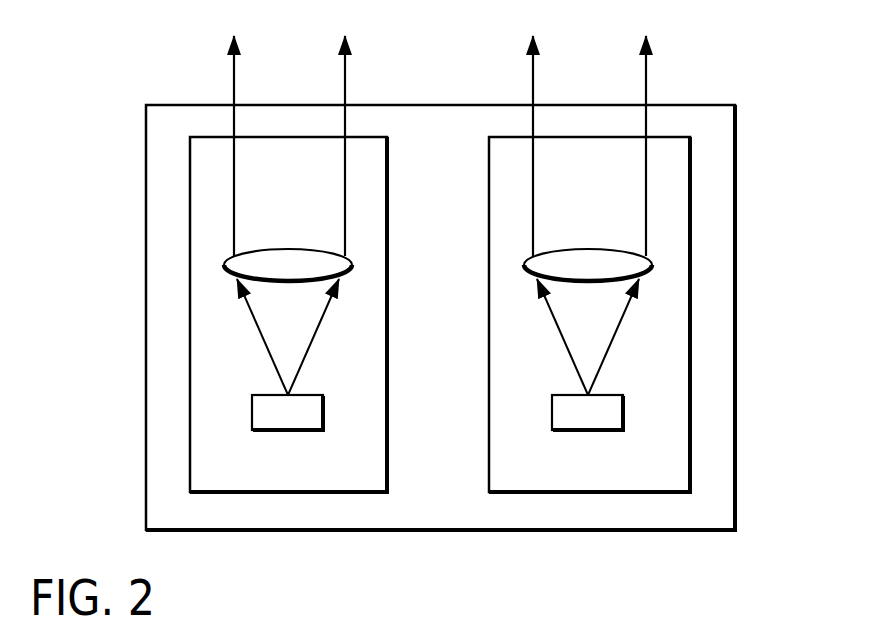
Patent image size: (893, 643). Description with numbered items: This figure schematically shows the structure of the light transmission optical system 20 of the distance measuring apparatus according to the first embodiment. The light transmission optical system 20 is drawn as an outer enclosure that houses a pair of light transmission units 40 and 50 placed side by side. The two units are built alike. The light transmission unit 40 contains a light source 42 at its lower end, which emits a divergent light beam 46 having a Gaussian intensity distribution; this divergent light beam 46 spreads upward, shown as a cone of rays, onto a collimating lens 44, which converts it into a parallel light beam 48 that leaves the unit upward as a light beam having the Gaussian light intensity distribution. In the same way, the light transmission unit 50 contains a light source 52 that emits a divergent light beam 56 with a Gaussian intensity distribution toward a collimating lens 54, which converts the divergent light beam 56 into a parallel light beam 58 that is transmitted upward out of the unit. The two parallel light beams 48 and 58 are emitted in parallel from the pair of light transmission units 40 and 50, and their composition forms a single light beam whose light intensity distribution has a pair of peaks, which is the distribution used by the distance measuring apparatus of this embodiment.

The light transmission optical system 20 is at (735, 216).
The light transmission unit 40 is at (190, 343).
The light source 42 is at (289, 433).
The collimating lens 44 is at (280, 249).
The divergent light beam 46 is at (305, 357).
The light beam 48 is at (346, 80).
The light transmission unit 50 is at (690, 352).
The light source 52 is at (589, 433).
The collimating lens 54 is at (580, 249).
The divergent light beam 56 is at (605, 357).
The light beam 58 is at (647, 80).